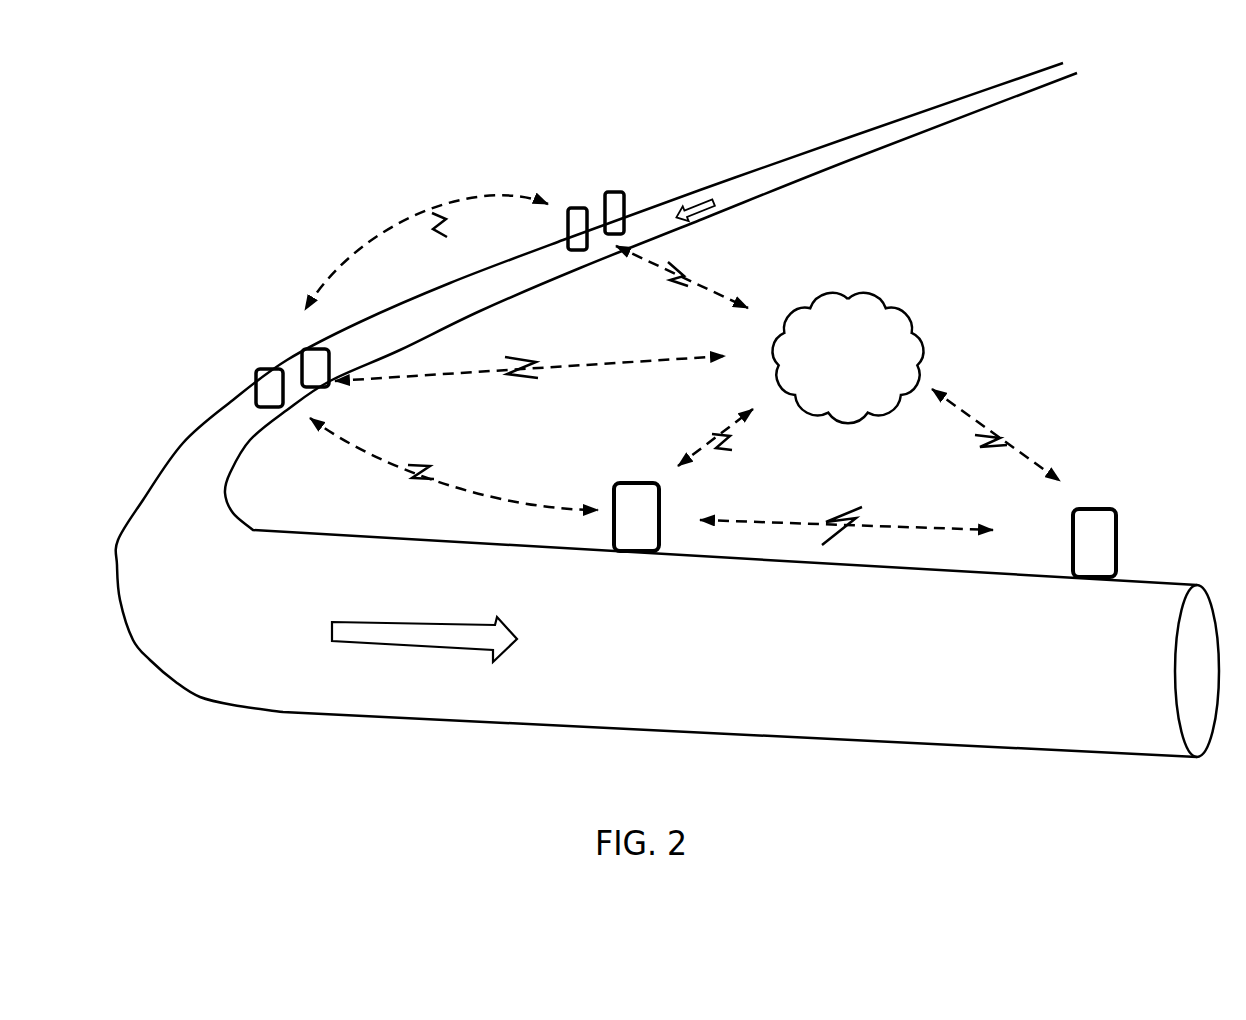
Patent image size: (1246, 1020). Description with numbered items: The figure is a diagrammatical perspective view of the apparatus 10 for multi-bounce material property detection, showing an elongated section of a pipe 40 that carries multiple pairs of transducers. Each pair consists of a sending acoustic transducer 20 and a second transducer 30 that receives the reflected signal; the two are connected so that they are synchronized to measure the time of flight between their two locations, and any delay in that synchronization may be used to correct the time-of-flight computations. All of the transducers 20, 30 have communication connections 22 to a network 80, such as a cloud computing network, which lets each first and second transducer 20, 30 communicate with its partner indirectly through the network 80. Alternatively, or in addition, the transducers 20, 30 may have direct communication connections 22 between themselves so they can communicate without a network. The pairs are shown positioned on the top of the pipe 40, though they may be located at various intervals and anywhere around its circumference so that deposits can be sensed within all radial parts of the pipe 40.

The apparatus for multi-bounce material property detection 10 is at (380, 130).
The sending acoustic transducer 20 is at (617, 198).
The communication connection 22 is at (682, 370).
The second transducer 30 is at (573, 220).
The pipe 40 is at (1100, 712).
The network 80 is at (865, 372).